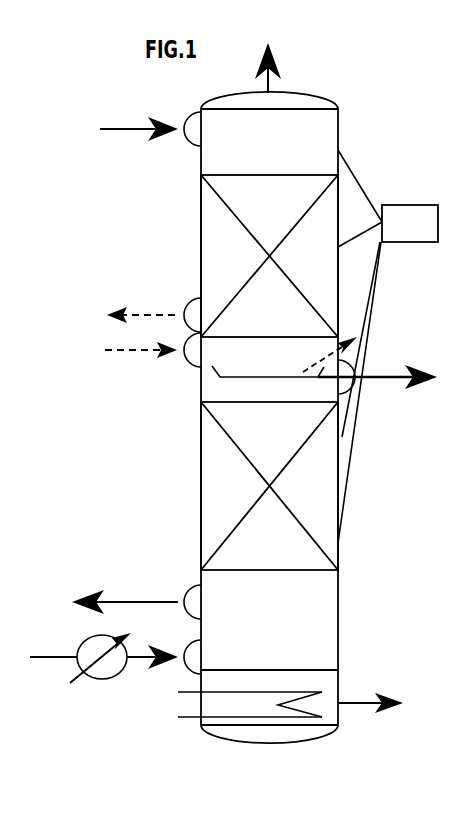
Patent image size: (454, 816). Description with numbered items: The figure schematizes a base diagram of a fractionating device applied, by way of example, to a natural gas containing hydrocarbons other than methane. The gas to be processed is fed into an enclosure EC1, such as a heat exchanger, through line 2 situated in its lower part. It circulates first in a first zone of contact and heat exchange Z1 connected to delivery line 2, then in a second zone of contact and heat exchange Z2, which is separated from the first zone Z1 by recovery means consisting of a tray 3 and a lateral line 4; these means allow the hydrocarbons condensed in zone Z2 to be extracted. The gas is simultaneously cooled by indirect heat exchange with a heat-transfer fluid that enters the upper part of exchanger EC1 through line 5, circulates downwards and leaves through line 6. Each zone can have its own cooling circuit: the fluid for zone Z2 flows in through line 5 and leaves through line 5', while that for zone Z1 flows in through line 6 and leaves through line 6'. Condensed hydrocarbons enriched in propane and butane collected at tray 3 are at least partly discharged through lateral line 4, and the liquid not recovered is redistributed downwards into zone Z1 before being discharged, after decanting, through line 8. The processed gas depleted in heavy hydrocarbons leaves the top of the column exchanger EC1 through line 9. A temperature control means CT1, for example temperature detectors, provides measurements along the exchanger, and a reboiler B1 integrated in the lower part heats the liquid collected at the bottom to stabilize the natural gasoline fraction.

The line 9 is at (274, 68).
The line 5 is at (150, 127).
The second zone of contact and heat exchange Z2 is at (200, 227).
The temperature control means CT1 is at (388, 198).
The line 5' is at (154, 314).
The line 6' is at (153, 360).
The tray 3 is at (338, 352).
The lateral line 4 is at (383, 377).
The enclosure EC1 is at (376, 392).
The first zone of contact and heat exchange Z1 is at (202, 487).
The line 6 is at (136, 598).
The line 2 is at (115, 658).
The reboiler B1 is at (232, 714).
The line 8 is at (370, 711).